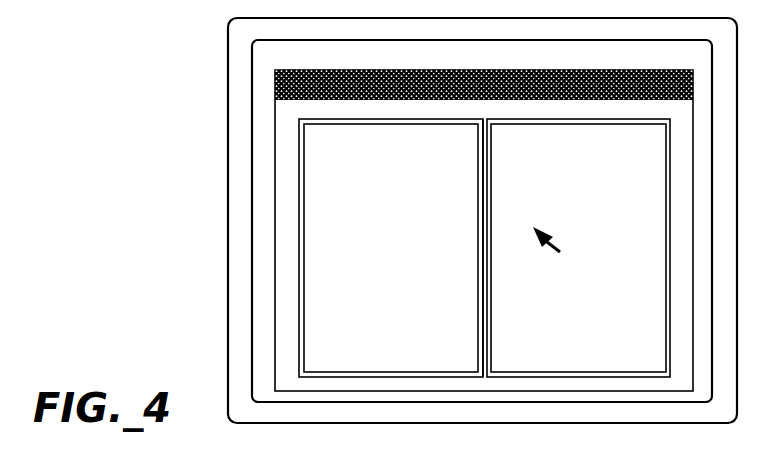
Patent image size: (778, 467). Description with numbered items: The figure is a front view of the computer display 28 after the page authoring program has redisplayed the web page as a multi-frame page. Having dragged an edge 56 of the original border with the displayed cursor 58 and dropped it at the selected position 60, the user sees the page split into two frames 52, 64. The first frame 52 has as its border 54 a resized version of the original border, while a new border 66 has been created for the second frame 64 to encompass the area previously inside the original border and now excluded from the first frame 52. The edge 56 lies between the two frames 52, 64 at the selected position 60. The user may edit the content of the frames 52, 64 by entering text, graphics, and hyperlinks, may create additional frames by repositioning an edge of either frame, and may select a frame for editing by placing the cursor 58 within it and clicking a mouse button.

The display screen 28 is at (228, 242).
The selected position 60 is at (484, 119).
The border 54 is at (331, 133).
The frame 52 is at (358, 336).
The edge 56 is at (478, 243).
The new border 66 is at (636, 133).
The frame 64 is at (555, 336).
The cursor 58 is at (562, 245).